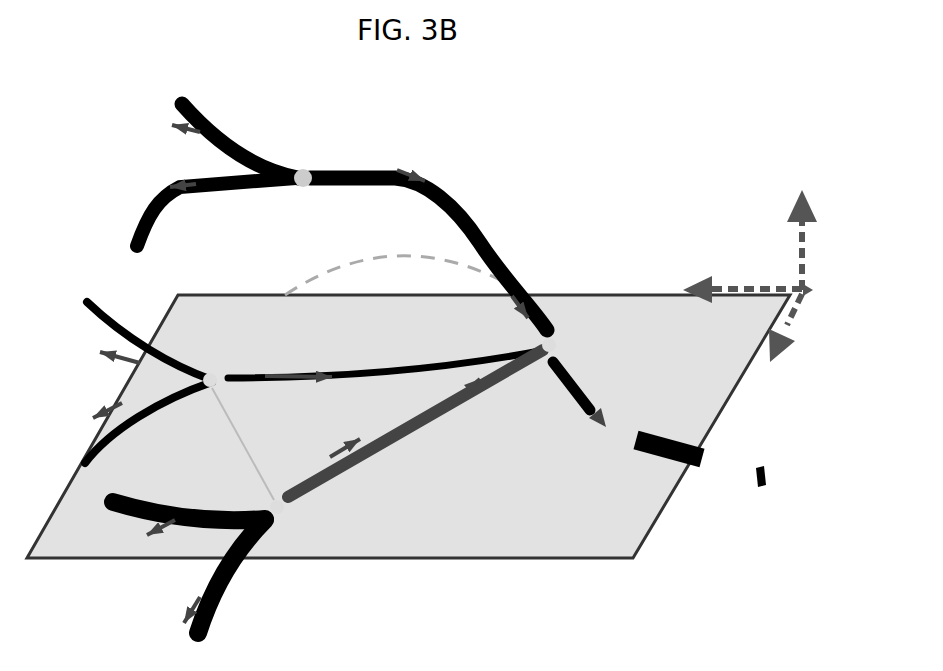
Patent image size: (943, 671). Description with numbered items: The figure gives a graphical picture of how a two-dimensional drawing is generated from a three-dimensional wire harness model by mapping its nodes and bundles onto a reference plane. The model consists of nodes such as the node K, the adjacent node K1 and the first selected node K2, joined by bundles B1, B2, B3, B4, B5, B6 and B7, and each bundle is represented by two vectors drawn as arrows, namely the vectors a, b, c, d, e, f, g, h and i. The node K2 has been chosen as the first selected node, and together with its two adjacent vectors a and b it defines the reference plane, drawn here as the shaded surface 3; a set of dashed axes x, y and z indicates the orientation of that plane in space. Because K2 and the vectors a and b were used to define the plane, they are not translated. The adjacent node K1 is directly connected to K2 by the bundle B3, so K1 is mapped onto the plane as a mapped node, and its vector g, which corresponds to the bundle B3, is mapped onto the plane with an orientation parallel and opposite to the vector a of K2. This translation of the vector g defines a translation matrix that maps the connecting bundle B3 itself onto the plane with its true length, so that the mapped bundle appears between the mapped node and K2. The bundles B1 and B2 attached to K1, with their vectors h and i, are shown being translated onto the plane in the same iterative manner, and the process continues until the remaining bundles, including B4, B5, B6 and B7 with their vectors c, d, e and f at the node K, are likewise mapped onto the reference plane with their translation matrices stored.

The surface / coordinate plane 3 is at (392, 285).
The bundle B1 is at (149, 333).
The bundle B2 is at (148, 427).
The bundle B3 is at (386, 359).
The bundle B4 is at (216, 217).
The bundle B5 is at (240, 137).
The bundle B6 is at (428, 254).
The bundle B7 is at (686, 466).
The node K is at (314, 207).
The adjacent node K1 is at (219, 352).
The first selected node K2 is at (587, 333).
The vector a is at (493, 389).
The vector b is at (584, 394).
The vector c is at (532, 294).
The vector d is at (384, 153).
The vector e is at (170, 121).
The vector f is at (174, 178).
The vector g is at (298, 364).
The vector h is at (106, 349).
The vector i is at (102, 426).
The x axis x is at (800, 328).
The y axis y is at (748, 267).
The z axis z is at (815, 240).